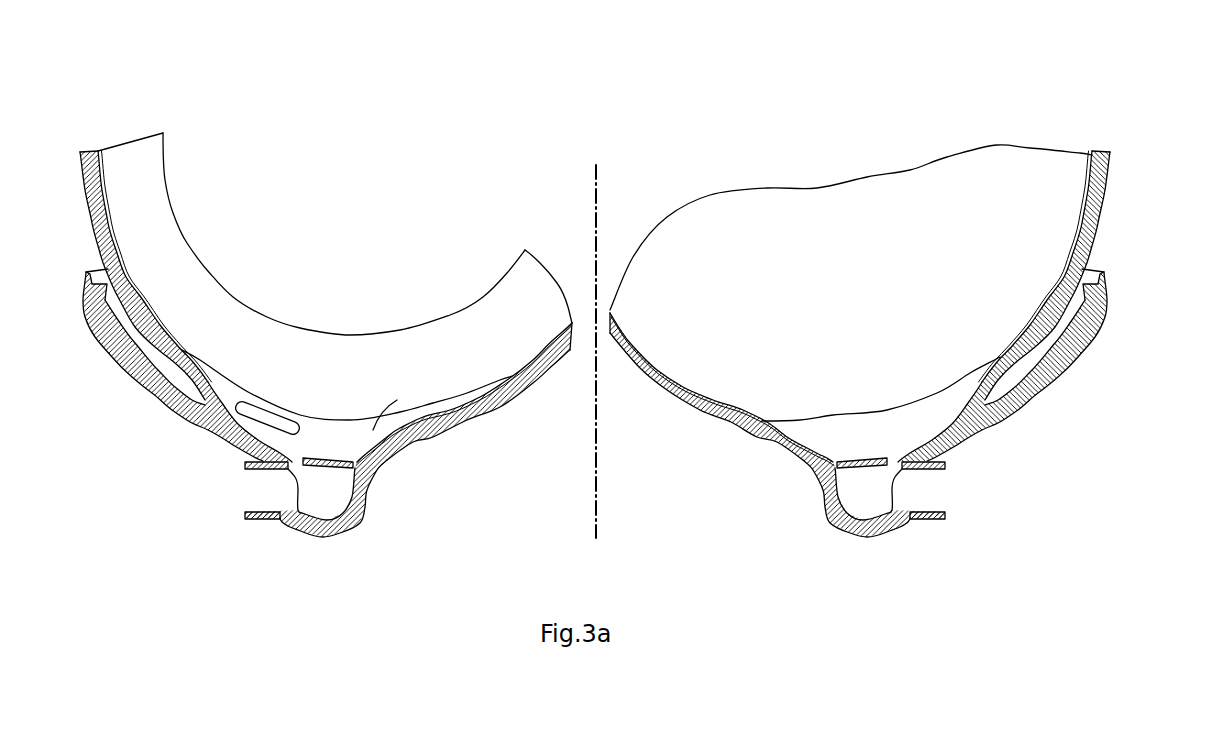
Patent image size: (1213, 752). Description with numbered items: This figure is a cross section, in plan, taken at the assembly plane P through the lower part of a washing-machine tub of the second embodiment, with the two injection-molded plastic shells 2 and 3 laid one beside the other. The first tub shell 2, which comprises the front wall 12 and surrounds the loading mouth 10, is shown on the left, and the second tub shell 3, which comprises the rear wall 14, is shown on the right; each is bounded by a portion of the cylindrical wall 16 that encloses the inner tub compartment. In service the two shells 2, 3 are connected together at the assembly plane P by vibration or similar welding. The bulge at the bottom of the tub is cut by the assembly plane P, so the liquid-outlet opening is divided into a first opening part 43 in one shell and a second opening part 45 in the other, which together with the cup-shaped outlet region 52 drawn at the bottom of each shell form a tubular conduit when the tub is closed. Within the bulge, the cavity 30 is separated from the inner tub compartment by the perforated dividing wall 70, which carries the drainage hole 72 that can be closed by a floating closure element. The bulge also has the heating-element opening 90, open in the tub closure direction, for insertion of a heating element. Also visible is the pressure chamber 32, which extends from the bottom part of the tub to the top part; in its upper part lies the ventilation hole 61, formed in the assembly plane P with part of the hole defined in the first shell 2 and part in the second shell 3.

The first tub shell 2 is at (80, 193).
The second tub shell 3 is at (1107, 200).
The assembly plane P is at (82, 152).
The loading mouth 10 is at (190, 243).
The front wall 12 is at (465, 343).
The rear wall 14 is at (747, 232).
The cylindrical wall 16 is at (530, 357).
The cavity 30 is at (817, 433).
The pressure chamber 32 is at (187, 387).
The first opening part 43 is at (927, 493).
The second opening part 45 is at (263, 498).
The cup / boss 52 is at (335, 505).
The ventilation hole 61 is at (97, 281).
The perforated dividing wall 70 is at (350, 462).
The drainage hole 72 is at (320, 458).
The heating-element opening 90 is at (262, 420).